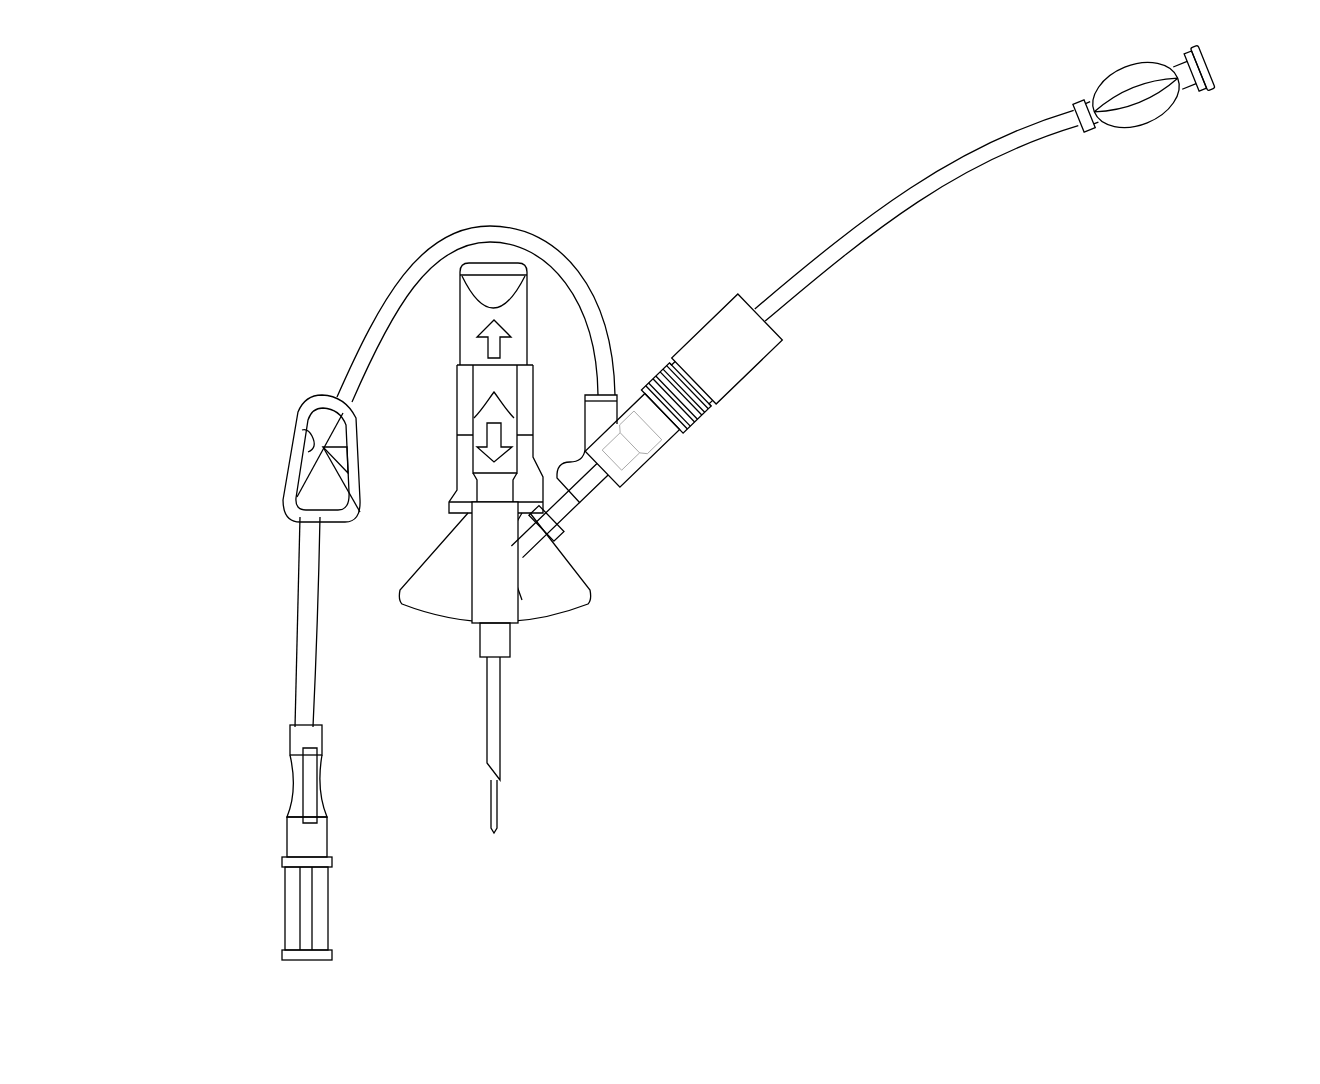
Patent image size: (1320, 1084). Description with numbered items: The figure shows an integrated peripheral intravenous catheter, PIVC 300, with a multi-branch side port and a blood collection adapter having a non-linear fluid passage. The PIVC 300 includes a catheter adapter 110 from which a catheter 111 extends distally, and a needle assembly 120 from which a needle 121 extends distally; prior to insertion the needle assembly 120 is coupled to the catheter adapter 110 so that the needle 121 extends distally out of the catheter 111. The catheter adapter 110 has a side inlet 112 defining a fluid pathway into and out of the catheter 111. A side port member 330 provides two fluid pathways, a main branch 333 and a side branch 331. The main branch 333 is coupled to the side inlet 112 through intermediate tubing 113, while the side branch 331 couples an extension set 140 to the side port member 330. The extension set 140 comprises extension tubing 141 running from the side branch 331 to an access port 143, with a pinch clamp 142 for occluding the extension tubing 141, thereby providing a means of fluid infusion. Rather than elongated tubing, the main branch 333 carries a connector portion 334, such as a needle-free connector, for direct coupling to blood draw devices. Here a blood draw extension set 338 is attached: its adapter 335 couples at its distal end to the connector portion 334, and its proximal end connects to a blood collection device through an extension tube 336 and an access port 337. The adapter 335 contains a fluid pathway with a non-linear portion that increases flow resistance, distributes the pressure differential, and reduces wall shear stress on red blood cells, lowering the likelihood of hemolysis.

The PIVC 300 is at (313, 146).
The catheter adapter 110 is at (461, 629).
The catheter 111 is at (503, 728).
The side inlet 112 is at (537, 563).
The intermediate tubing 113 is at (563, 507).
The needle assembly 120 is at (478, 350).
The needle 121 is at (497, 820).
The extension set 140 is at (295, 348).
The extension tubing 141 is at (418, 262).
The pinch clamp 142 is at (282, 463).
The access port 143 is at (258, 890).
The side port member 330 is at (634, 310).
The side branch 331 is at (578, 396).
The main branch 333 is at (658, 478).
The connector portion 334 is at (664, 455).
The adapter 335 is at (742, 383).
The extension tube 336 is at (884, 215).
The access port 337 is at (1160, 137).
The blood draw extension set 338 is at (916, 261).